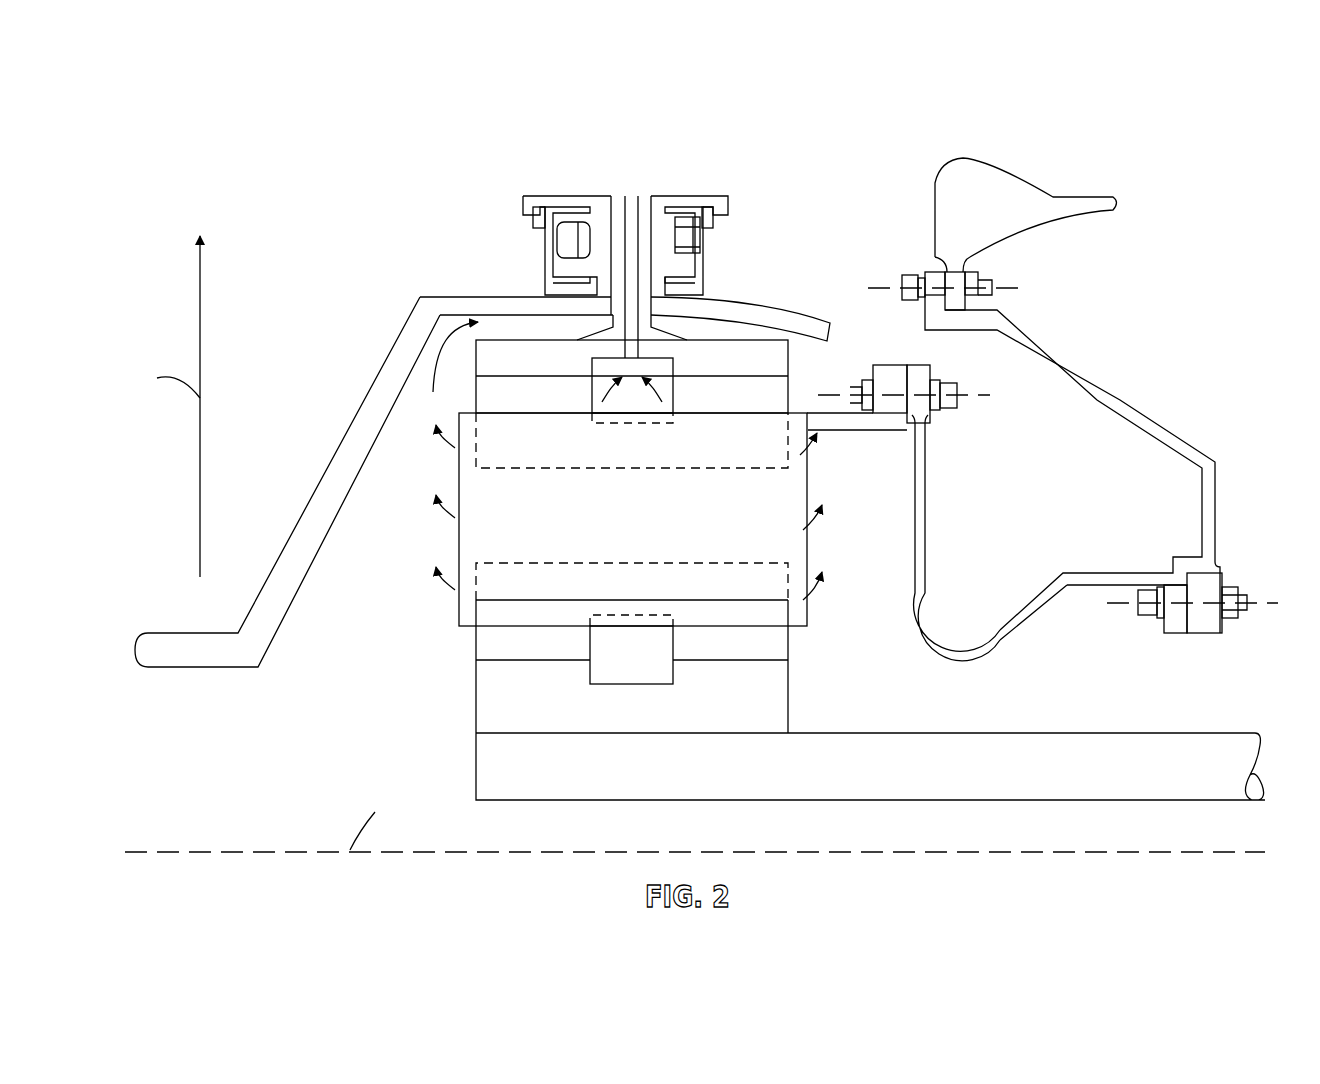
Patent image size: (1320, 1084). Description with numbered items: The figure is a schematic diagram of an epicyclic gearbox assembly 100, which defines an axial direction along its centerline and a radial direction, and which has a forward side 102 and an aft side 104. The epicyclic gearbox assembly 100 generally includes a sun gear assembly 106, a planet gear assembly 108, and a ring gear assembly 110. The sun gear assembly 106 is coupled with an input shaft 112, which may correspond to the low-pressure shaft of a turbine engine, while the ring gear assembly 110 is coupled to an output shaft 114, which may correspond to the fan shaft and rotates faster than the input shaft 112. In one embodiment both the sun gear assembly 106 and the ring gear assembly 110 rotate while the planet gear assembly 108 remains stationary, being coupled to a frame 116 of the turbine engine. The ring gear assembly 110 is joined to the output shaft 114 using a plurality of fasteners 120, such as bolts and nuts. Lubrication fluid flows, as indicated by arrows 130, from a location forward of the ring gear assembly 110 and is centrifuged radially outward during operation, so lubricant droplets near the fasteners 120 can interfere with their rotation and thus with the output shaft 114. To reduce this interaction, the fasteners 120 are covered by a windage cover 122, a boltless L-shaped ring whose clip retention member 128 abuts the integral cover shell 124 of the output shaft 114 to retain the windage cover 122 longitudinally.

The epicyclic gearbox assembly 100 is at (1198, 120).
The forward side 102 is at (457, 598).
The aft side 104 is at (808, 615).
The sun gear assembly 106 is at (733, 732).
The planet gear assembly 108 is at (457, 538).
The ring gear assembly 110 is at (760, 352).
The input shaft 112 is at (1082, 757).
The output shaft 114 is at (363, 432).
The frame 116 is at (993, 188).
The fasteners 120 is at (692, 233).
The windage cover 122 is at (545, 208).
The integral cover shell 124 is at (710, 195).
The clip retention member 128 is at (540, 208).
The arrows 130 is at (440, 335).